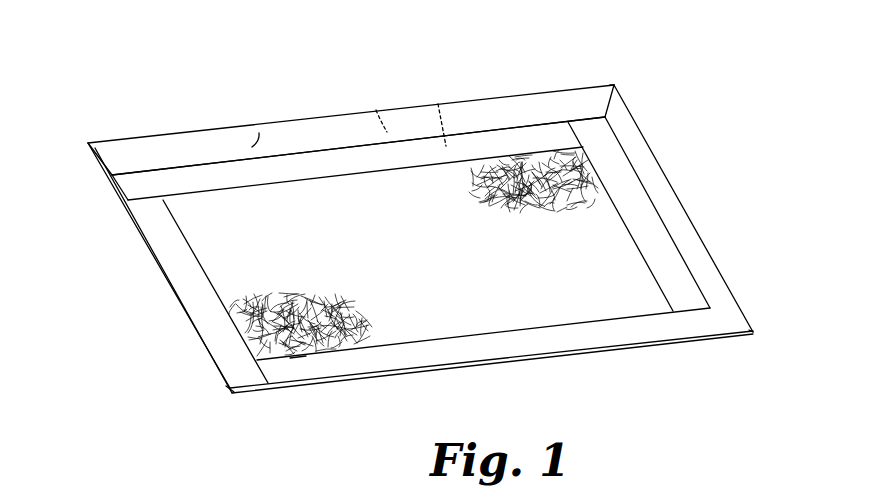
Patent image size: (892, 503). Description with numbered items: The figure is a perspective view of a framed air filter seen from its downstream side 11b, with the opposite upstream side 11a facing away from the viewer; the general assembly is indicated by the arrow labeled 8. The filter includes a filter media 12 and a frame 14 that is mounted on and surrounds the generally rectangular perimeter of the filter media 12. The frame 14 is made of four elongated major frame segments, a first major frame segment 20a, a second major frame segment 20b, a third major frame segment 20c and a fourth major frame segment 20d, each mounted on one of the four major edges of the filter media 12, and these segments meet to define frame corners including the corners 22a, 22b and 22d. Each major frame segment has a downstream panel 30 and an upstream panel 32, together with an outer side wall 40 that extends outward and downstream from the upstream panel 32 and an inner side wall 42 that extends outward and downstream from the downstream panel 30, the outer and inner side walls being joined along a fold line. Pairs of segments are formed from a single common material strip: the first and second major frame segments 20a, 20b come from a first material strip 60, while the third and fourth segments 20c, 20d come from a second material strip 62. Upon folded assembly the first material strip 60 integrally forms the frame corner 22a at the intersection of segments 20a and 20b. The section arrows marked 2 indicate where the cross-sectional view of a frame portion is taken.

The tray assembly 8 is at (82, 135).
The upstream side 11a is at (631, 378).
The downstream side 11b is at (681, 101).
The filter media 12 is at (519, 160).
The frame 14 is at (305, 108).
The first major frame segment 20a is at (197, 132).
The second major frame segment 20b is at (675, 190).
The third major frame segment 20c is at (413, 373).
The fourth major frame segment 20d is at (168, 290).
The frame corner 22a is at (617, 104).
The frame corner 22b is at (753, 334).
The frame corner 22d is at (106, 166).
The downstream panel 30 is at (557, 130).
The upstream panel 32 is at (438, 104).
The outer side wall 40 is at (376, 110).
The inner side wall 42 is at (259, 133).
The first material strip 60 is at (597, 70).
The second material strip 62 is at (297, 367).
The section line 2- 2 is at (475, 333).